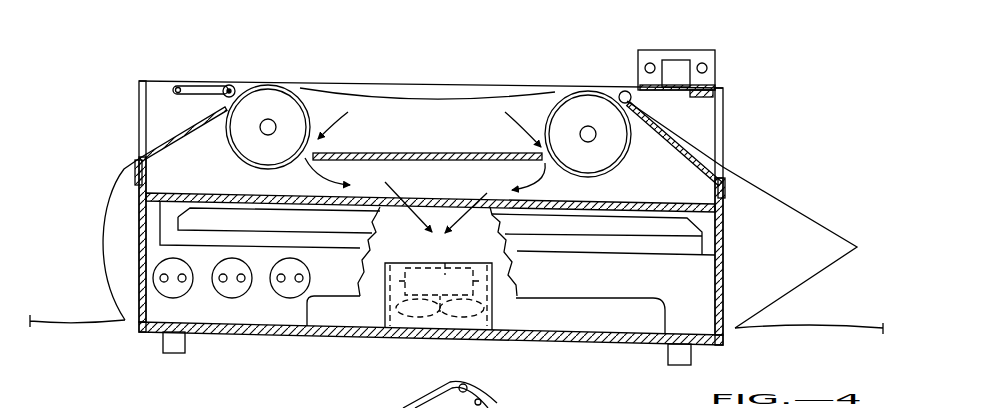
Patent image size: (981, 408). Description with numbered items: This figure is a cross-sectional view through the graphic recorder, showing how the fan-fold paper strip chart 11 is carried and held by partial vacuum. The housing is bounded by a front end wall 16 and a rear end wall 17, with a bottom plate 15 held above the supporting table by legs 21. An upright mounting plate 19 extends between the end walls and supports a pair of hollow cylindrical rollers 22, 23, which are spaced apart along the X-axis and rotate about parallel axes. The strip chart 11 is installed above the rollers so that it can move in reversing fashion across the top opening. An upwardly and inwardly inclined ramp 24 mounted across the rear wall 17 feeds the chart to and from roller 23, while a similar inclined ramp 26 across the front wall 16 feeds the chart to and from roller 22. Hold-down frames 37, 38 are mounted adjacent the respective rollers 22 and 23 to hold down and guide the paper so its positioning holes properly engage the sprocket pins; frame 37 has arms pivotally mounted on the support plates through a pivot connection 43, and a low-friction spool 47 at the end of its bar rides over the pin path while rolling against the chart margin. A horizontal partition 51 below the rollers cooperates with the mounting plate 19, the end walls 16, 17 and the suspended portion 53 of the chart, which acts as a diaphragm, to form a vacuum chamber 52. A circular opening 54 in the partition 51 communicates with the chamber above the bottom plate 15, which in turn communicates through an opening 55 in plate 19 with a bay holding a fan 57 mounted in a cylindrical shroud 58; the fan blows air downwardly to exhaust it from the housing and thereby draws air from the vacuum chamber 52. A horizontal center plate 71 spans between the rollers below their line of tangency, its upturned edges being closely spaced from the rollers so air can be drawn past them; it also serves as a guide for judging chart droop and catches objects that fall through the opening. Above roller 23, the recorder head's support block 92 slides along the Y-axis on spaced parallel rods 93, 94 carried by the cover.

The strip chart 11 is at (750, 185).
The bottom plate 15 is at (550, 345).
The end wall 16 is at (139, 241).
The end wall 17 is at (723, 236).
The mounting plate 19 is at (700, 285).
The legs 21 is at (182, 344).
The roller 22 is at (240, 162).
The roller 23 is at (628, 158).
The ramp 24 is at (703, 168).
The ramp 26 is at (170, 156).
The hold-down frame 37 is at (230, 85).
The hold-down frame 38 is at (620, 92).
The pivot connection 43 is at (174, 86).
The spool 47 is at (204, 86).
The partition 51 is at (537, 180).
The vacuum chamber 52 is at (411, 133).
The suspended portion of the strip chart 53 is at (412, 98).
The circular opening 54 is at (378, 208).
The opening 55 is at (585, 299).
The fan 57 is at (493, 316).
The shroud 58 is at (447, 270).
The center plate 71 is at (448, 153).
The support block 92 is at (672, 50).
The rod 93 is at (710, 68).
The rod 94 is at (642, 63).